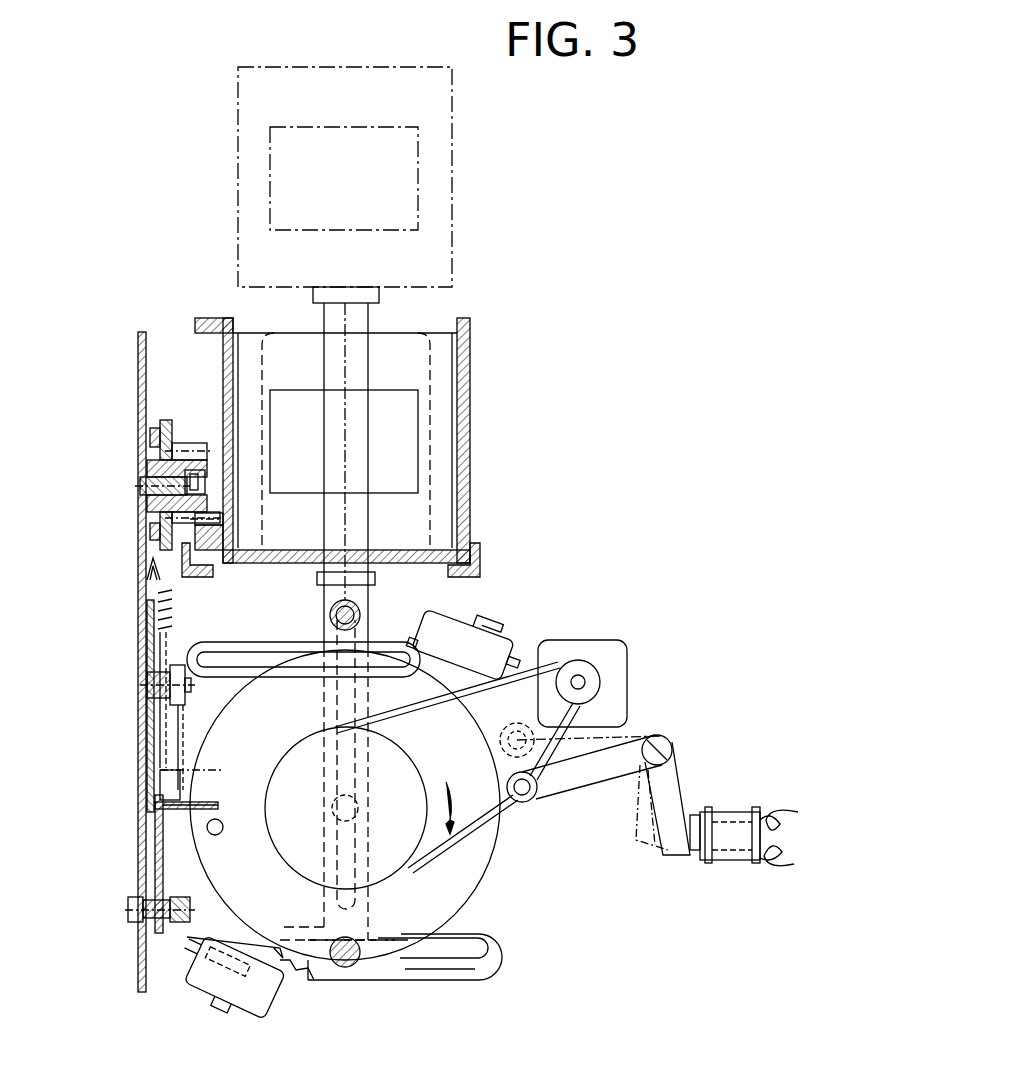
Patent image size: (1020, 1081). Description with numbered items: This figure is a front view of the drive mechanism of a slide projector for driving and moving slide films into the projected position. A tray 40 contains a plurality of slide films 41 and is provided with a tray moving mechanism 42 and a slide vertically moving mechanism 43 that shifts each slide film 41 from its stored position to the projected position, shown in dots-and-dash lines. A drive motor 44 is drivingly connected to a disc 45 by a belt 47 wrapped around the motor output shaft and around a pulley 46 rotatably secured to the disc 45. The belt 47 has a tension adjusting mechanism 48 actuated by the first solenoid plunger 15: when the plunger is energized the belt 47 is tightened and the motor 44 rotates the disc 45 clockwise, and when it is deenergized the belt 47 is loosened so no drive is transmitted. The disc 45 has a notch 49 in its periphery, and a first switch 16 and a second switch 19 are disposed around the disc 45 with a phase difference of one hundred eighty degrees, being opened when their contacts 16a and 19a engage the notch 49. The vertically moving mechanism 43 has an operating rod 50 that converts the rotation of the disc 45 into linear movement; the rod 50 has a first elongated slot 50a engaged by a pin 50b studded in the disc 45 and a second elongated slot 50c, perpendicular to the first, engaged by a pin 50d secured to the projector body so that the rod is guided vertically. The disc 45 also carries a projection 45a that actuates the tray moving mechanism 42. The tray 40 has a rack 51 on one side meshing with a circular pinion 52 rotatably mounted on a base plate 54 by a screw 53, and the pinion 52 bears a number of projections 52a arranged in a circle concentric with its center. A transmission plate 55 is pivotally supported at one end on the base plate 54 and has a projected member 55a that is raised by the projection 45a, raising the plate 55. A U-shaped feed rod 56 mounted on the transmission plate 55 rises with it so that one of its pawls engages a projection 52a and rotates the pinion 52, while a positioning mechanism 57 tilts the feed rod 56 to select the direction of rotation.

The first solenoid plunger 15 is at (724, 844).
The first switch 16 is at (268, 1010).
The contact 16a is at (274, 944).
The second switch 19 is at (486, 634).
The contact 19a is at (421, 662).
The tray 40 is at (470, 388).
The slide film 41 is at (414, 326).
The tray moving mechanism 42 is at (216, 618).
The slide vertically moving mechanism 43 is at (372, 592).
The drive motor 44 is at (592, 650).
The disc 45 is at (484, 876).
The projection 45a is at (220, 834).
The pulley 46 is at (394, 759).
The belt 47 is at (522, 802).
The tension adjusting mechanism 48 is at (596, 770).
The notch 49 is at (297, 966).
The operating rod 50 is at (500, 947).
The first elongated slot 50a is at (454, 972).
The pin 50b is at (358, 946).
The second elongated slot 50c is at (334, 708).
The pin 50d is at (330, 615).
The rack 51 is at (218, 562).
The circular pinion 52 is at (186, 444).
The projections 52a is at (158, 428).
The screw 53 is at (198, 484).
The base plate 54 is at (138, 387).
The transmission plate 55 is at (150, 867).
The projected member 55a is at (216, 800).
The U-shaped feed rod 56 is at (146, 731).
The positioning mechanism 57 is at (176, 628).